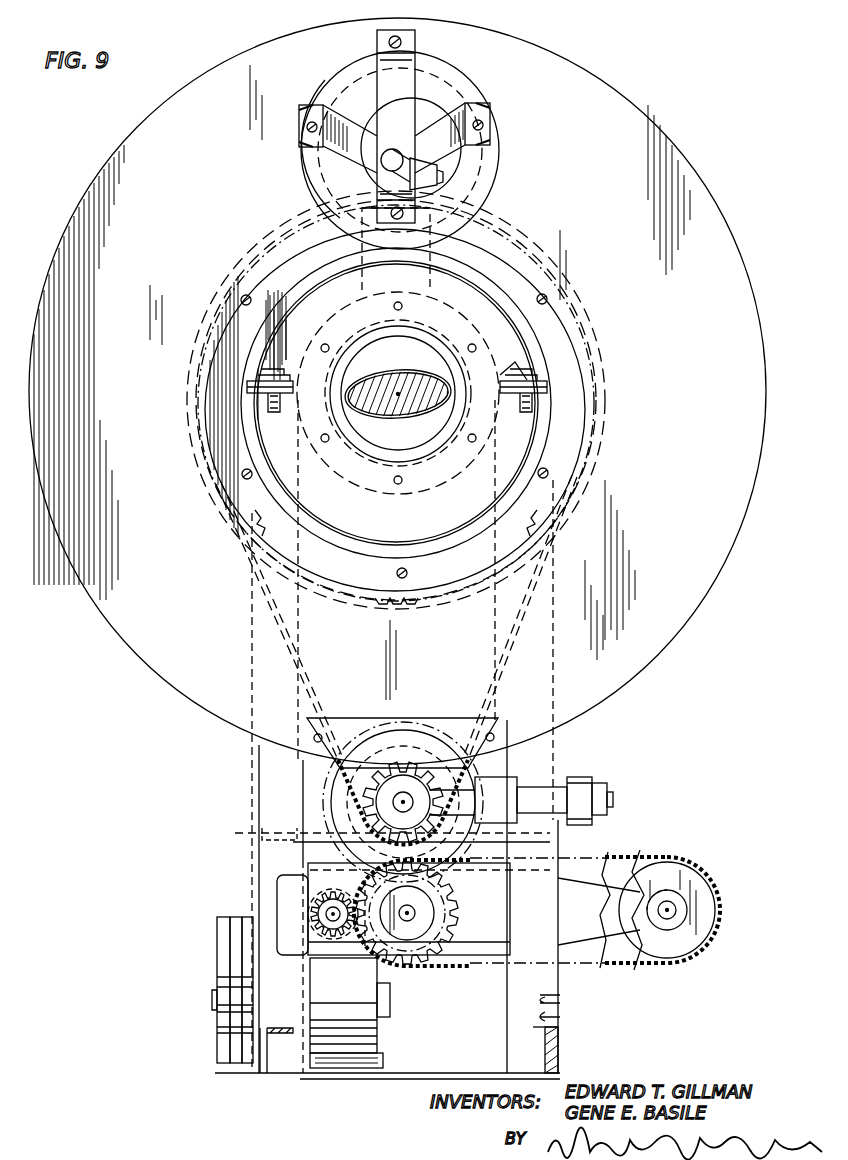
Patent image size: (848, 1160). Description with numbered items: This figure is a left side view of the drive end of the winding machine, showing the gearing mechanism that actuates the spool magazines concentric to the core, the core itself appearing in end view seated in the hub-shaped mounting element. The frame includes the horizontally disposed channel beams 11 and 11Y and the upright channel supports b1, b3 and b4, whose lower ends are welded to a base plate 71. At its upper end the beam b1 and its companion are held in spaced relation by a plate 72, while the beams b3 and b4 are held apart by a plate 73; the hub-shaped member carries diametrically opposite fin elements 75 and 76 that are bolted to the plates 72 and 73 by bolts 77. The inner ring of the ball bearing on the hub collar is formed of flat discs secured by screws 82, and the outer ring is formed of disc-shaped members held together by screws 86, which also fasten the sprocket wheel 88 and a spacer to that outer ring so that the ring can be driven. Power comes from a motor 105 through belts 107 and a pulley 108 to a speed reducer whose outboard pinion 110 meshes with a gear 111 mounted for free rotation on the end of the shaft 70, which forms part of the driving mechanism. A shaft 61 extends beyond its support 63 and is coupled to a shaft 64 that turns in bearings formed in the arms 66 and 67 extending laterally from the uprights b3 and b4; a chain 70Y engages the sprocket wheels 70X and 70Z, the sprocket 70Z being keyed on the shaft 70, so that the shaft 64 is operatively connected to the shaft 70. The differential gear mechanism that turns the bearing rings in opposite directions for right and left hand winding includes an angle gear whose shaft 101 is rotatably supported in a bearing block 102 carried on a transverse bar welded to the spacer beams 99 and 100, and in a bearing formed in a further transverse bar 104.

The screws 86 is at (550, 301).
The sprocket wheel 88 is at (424, 596).
The screws 82 is at (472, 442).
The plate 72 is at (263, 398).
The fin element 76 is at (277, 373).
The plate 73 is at (557, 402).
The fin element 75 is at (552, 385).
The bolts 77 is at (527, 380).
The upright support b1 is at (241, 793).
The shaft 61 is at (267, 787).
The bearing block 102 is at (510, 770).
The shaft 101 is at (612, 798).
The transverse bar 104 is at (580, 777).
The channel beam 99 is at (382, 833).
The channel beam 100 is at (553, 855).
The gear 111 is at (300, 883).
The outboard pinion 110 is at (318, 905).
The sprocket wheel 70Z is at (458, 907).
The shaft 70 is at (412, 918).
The motor 105 is at (372, 1043).
The base plate 71 is at (394, 1073).
The horizontally disposed beam 11 is at (264, 1070).
The belts 107 is at (240, 928).
The pulley 108 is at (218, 1018).
The arm 66 is at (577, 933).
The shaft 64 is at (672, 912).
The arm 67 is at (613, 884).
The sprocket wheel 70X is at (705, 912).
The chain 70Y is at (713, 935).
The upright support b3 is at (572, 1004).
The support 63 is at (560, 1003).
The upright support b4 is at (571, 1021).
The horizontally disposed beam 11Y is at (560, 1052).